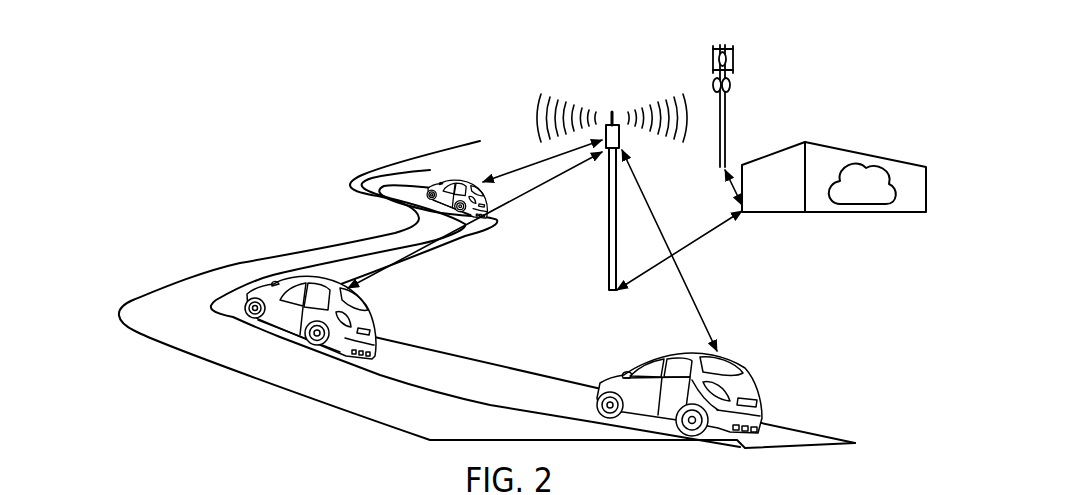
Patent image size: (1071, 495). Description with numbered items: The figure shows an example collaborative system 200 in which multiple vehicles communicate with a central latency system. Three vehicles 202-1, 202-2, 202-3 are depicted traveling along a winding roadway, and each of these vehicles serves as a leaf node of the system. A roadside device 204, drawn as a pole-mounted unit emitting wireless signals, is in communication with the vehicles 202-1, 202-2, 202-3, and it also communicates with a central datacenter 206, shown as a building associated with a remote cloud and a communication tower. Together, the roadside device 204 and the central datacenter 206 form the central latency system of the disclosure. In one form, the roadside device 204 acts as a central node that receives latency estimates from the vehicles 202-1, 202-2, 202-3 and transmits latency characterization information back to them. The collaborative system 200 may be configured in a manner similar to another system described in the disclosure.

The collaborative system 200 is at (275, 145).
The vehicle 202-1 is at (761, 396).
The vehicle 202-2 is at (376, 316).
The vehicle 202-3 is at (484, 182).
The roadside device 204 is at (609, 203).
The central datacenter 206 is at (847, 212).